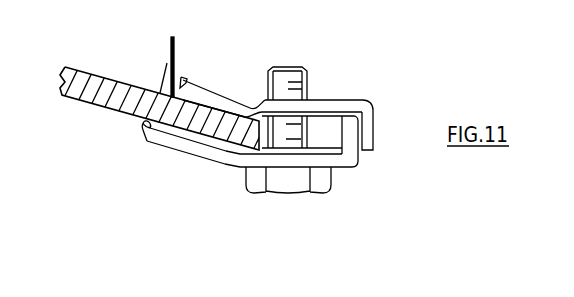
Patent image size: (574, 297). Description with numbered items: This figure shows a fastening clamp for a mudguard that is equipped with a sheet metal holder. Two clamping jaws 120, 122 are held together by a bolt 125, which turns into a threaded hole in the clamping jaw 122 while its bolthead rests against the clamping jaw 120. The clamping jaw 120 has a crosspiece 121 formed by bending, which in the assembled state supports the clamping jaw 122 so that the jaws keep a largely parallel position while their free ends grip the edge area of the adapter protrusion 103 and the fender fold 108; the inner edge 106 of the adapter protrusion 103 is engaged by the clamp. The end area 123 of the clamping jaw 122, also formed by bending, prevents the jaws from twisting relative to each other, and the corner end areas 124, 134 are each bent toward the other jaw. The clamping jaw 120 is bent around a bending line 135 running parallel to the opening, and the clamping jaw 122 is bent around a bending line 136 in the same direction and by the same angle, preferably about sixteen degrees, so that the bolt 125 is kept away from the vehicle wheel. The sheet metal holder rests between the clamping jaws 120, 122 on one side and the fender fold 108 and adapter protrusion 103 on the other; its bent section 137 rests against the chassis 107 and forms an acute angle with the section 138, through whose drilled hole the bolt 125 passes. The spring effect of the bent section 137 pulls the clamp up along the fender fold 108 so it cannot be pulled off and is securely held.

The adapter protrusion 103 is at (93, 105).
The inner edge 106 is at (262, 194).
The chassis 107 is at (170, 46).
The fender fold 108 is at (212, 67).
The clamping jaw 120 is at (206, 155).
The crosspiece 121 is at (364, 167).
The clamping jaw 122 is at (333, 93).
The end area 123 is at (372, 106).
The corner end area 124 is at (188, 84).
The bolt 125 is at (323, 195).
The corner end area 134 is at (147, 137).
The bending line 135 is at (238, 168).
The bending line 136 is at (256, 96).
The bent section 137 is at (163, 81).
The section 138 is at (338, 113).